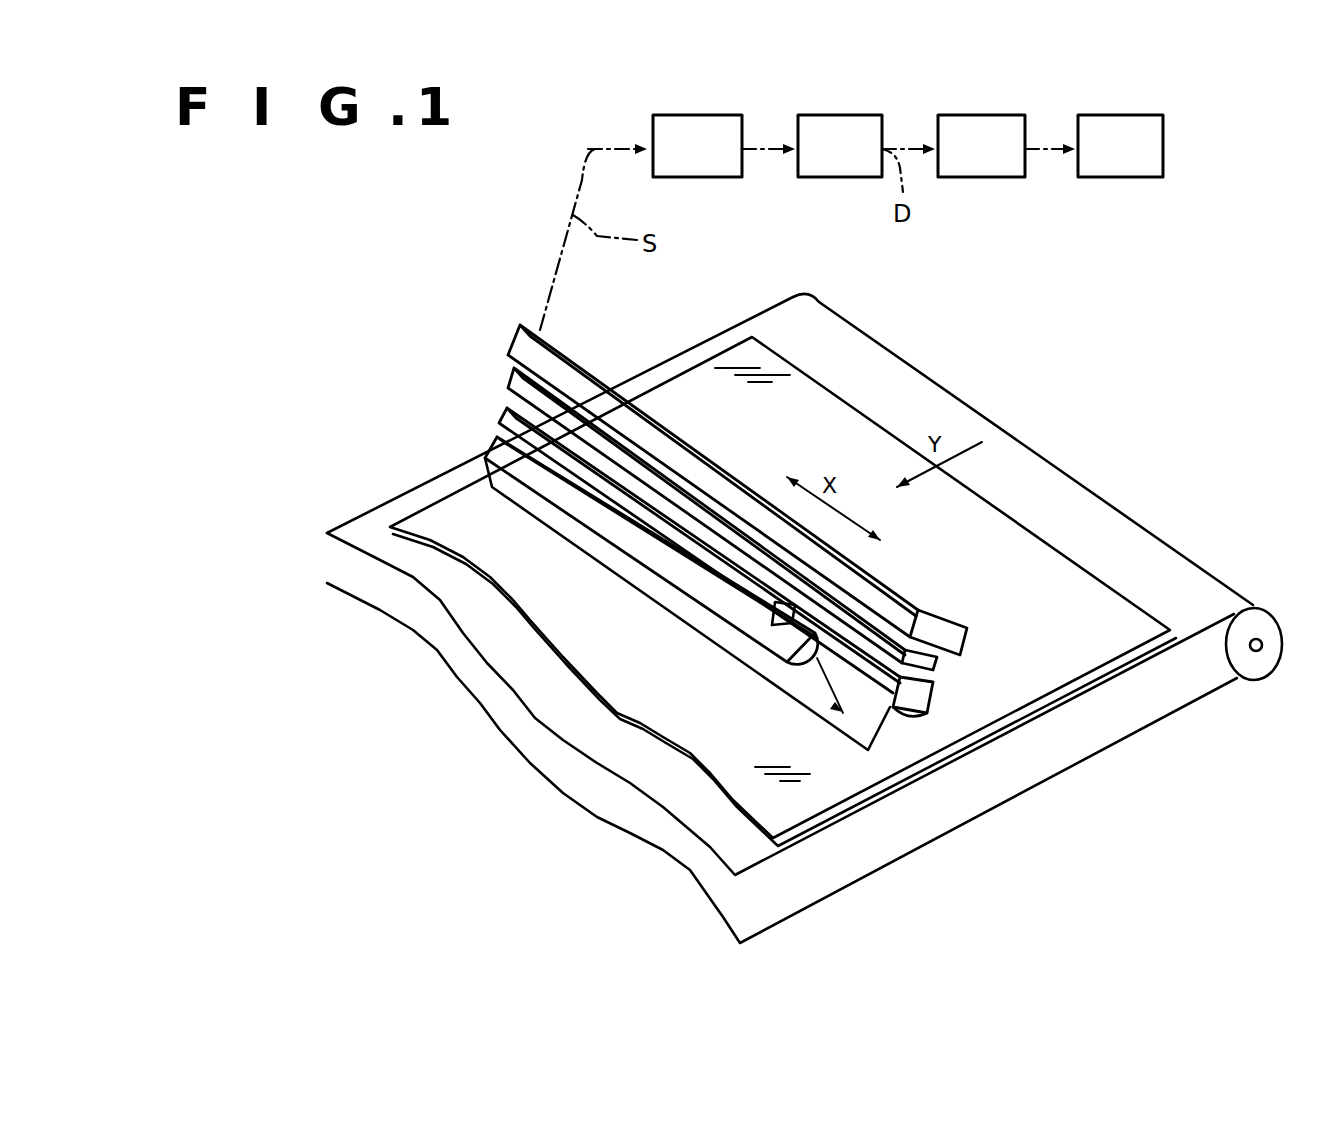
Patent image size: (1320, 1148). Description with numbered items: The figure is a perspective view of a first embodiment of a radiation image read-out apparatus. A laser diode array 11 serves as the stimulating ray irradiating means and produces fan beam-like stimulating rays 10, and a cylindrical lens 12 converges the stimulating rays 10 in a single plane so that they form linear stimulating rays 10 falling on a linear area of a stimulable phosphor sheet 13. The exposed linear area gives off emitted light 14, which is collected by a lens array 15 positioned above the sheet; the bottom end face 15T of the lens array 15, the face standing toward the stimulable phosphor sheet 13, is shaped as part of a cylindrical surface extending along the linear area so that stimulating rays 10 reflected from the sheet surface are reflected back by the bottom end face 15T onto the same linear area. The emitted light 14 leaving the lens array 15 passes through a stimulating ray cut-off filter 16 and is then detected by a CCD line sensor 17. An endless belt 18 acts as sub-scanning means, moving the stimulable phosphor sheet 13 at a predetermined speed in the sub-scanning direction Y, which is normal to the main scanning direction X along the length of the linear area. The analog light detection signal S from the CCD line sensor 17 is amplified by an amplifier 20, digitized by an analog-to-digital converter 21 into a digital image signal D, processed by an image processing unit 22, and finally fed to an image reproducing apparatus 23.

The stimulating rays 10 is at (817, 677).
The laser diode array 11 is at (740, 603).
The cylindrical lens 12 is at (697, 592).
The stimulable phosphor sheet 13 is at (820, 787).
The emitted light 14 is at (877, 733).
The lens array 15 is at (937, 698).
The bottom end face 15T is at (880, 713).
The stimulating ray cut-off filter 16 is at (933, 665).
The CCD line sensor 17 is at (960, 630).
The endless belt 18 is at (1148, 720).
The amplifier 20 is at (716, 166).
The analog-to-digital converter 21 is at (858, 166).
The image processing unit 22 is at (1000, 166).
The image reproducing apparatus 23 is at (1139, 166).